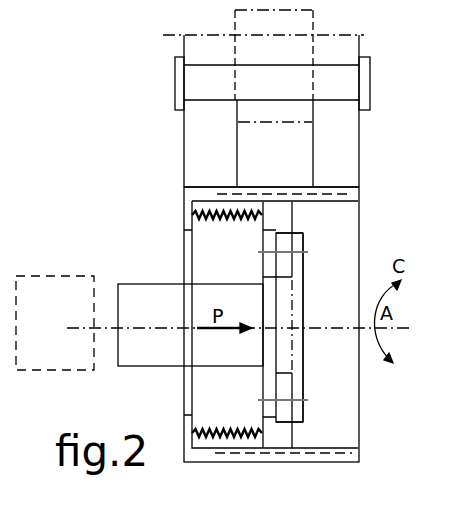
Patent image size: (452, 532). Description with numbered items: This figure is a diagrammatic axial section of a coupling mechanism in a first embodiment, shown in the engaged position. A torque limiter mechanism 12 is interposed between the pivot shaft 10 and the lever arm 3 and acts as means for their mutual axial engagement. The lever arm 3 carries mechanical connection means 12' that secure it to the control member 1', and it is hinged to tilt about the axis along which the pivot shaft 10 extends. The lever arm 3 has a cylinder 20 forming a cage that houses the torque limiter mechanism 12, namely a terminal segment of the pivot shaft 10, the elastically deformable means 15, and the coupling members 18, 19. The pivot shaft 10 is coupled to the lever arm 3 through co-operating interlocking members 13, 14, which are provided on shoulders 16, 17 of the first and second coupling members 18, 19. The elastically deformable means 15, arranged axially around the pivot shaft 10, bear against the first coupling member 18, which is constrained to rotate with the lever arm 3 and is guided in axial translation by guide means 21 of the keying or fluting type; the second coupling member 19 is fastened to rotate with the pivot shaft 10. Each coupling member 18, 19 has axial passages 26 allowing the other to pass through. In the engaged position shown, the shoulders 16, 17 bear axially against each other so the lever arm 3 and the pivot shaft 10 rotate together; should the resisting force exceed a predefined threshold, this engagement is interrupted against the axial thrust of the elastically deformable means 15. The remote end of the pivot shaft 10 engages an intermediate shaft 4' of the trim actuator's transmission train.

The control member 1' is at (279, 96).
The mechanical connection means 12' is at (235, 83).
The lever arm 3 is at (359, 125).
The cylinder 20 is at (200, 187).
The guide means 21 is at (253, 455).
The torque limiter mechanism 12 is at (209, 203).
The elastically deformable means 15 is at (217, 219).
The shoulder 16 is at (262, 425).
The pivot shaft 10 is at (153, 318).
The intermediate shaft 4' is at (55, 323).
The first coupling member 18 is at (297, 213).
The second coupling member 19 is at (308, 292).
The interlocking member 13 is at (359, 321).
The interlocking member 14 is at (290, 240).
The shoulder 17 is at (302, 372).
The axial passages 26 is at (316, 400).